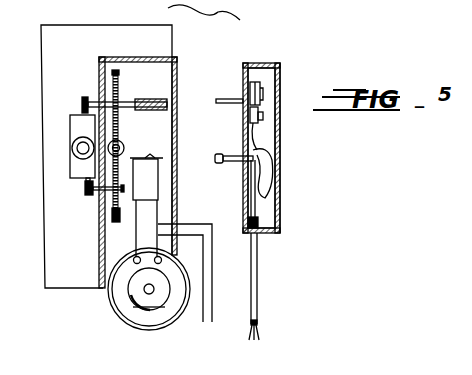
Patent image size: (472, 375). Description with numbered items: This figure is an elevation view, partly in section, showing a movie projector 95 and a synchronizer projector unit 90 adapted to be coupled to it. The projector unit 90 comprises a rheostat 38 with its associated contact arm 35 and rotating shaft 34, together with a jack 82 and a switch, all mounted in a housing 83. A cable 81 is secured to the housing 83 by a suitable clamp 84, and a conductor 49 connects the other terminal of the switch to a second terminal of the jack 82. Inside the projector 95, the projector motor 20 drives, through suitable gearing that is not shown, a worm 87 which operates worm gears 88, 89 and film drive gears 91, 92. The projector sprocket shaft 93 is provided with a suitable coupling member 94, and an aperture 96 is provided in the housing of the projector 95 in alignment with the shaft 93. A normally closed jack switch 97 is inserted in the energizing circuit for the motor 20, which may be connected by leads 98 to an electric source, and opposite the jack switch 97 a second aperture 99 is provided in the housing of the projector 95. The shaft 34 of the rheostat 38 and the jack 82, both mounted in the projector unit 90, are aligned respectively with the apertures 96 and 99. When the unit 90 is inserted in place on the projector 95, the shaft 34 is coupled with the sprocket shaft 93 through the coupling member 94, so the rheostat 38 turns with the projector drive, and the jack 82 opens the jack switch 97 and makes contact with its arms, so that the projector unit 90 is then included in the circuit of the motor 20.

The projector motor 20 is at (165, 328).
The rotating shaft 34 is at (237, 103).
The contact arm 35 is at (263, 112).
The rheostat 38 is at (263, 92).
The conductor 49 is at (273, 180).
The cable 81 is at (258, 268).
The jack 82 is at (236, 163).
The housing 83 is at (280, 70).
The clamp 84 is at (248, 223).
The worm 87 is at (123, 145).
The worm gear 88 is at (118, 74).
The worm gear 89 is at (114, 223).
The projector unit 90 is at (308, 229).
The film drive gear 91 is at (85, 97).
The film drive gear 92 is at (90, 193).
The projector sprocket shaft 93 is at (131, 102).
The coupling member 94 is at (156, 99).
The projector 95 is at (36, 223).
The aperture 96 is at (177, 103).
The jack switch 97 is at (144, 158).
The leads 98 is at (210, 308).
The aperture 99 is at (177, 165).